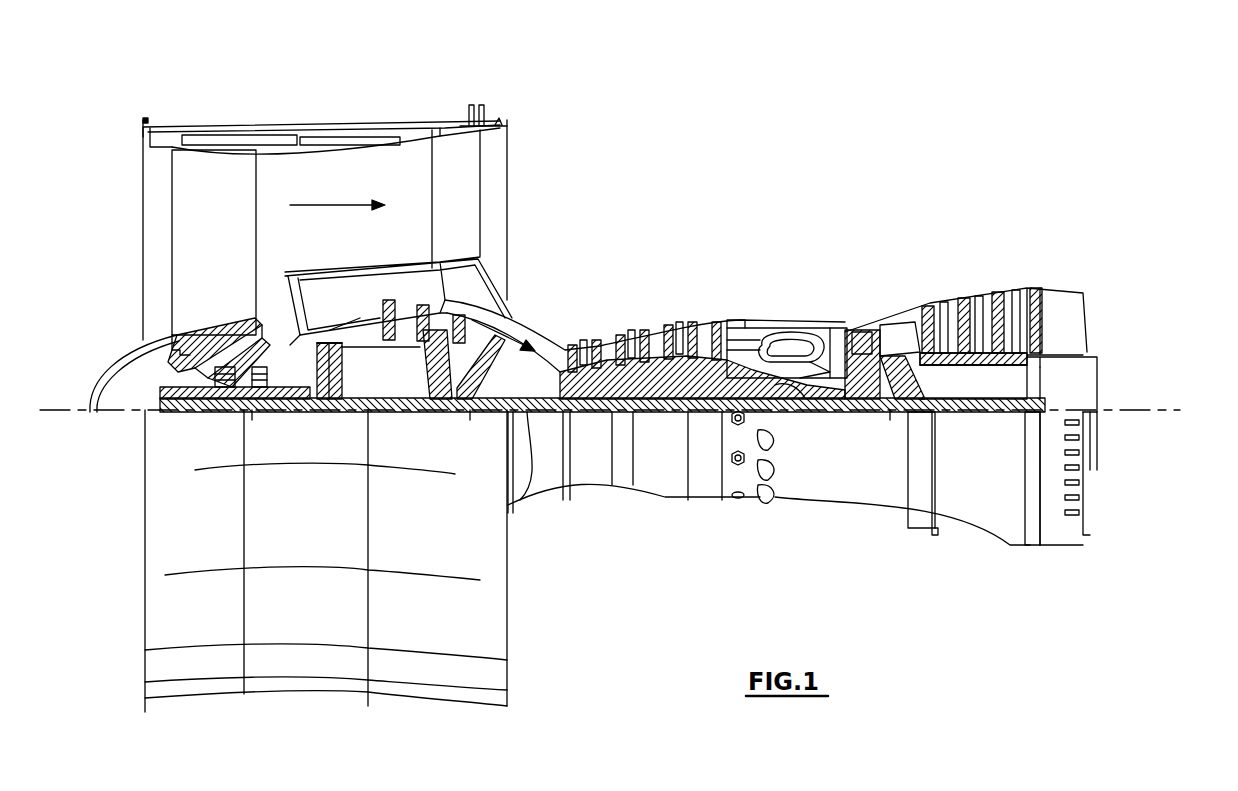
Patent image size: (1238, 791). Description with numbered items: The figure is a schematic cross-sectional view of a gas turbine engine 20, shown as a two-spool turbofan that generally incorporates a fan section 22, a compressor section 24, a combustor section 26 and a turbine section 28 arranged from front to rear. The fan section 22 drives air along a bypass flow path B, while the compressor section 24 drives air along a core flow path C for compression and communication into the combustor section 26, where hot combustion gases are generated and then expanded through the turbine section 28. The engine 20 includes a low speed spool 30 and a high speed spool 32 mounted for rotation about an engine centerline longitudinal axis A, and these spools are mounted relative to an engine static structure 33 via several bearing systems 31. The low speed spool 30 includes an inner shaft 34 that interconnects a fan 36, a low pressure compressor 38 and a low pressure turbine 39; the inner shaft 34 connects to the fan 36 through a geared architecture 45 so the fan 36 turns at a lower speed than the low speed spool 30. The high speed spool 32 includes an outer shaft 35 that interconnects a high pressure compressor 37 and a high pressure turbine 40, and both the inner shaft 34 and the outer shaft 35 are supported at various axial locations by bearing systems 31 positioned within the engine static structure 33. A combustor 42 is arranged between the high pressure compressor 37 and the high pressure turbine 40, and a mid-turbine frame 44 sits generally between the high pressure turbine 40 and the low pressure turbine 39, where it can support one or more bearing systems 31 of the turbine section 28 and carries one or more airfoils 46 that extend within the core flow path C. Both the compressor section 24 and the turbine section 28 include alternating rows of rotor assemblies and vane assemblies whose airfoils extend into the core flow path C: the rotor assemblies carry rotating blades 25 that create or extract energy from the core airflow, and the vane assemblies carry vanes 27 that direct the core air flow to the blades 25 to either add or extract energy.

The gas turbine engine 20 is at (783, 184).
The fan section 22 is at (257, 120).
The compressor section 24 is at (557, 328).
The rotating blades 25 is at (389, 318).
The combustor section 26 is at (782, 310).
The vanes 27 is at (418, 308).
The turbine section 28 is at (927, 268).
The low speed spool 30 is at (665, 412).
The bearing systems 31 is at (245, 412).
The high speed spool 32 is at (700, 372).
The engine static structure 33 is at (705, 497).
The inner shaft 34 is at (530, 412).
The outer shaft 35 is at (783, 400).
The fan 36 is at (227, 256).
The high pressure compressor 37 is at (634, 372).
The low pressure compressor 38 is at (480, 272).
The low pressure turbine 39 is at (990, 293).
The high pressure turbine 40 is at (850, 350).
The combustor 42 is at (786, 350).
The mid-turbine frame 44 is at (889, 325).
The geared architecture 45 is at (325, 412).
The airfoils 46 is at (910, 362).
The engine centerline longitudinal axis A is at (1176, 412).
The bypass flow path B is at (332, 207).
The core flow path C is at (577, 278).